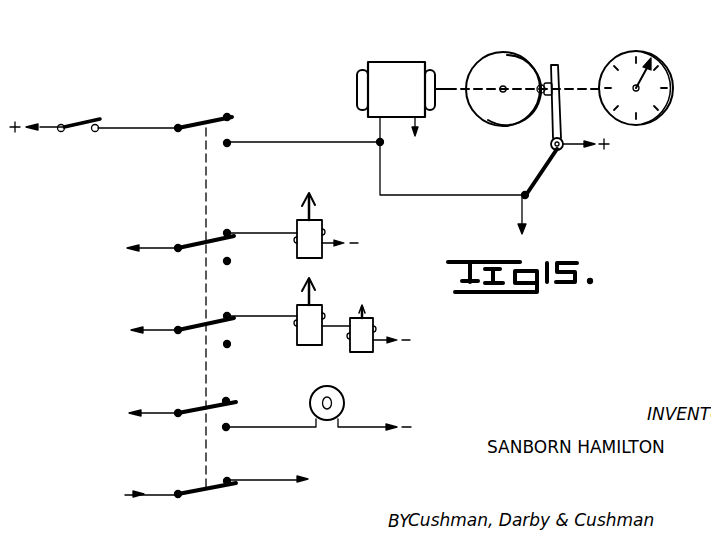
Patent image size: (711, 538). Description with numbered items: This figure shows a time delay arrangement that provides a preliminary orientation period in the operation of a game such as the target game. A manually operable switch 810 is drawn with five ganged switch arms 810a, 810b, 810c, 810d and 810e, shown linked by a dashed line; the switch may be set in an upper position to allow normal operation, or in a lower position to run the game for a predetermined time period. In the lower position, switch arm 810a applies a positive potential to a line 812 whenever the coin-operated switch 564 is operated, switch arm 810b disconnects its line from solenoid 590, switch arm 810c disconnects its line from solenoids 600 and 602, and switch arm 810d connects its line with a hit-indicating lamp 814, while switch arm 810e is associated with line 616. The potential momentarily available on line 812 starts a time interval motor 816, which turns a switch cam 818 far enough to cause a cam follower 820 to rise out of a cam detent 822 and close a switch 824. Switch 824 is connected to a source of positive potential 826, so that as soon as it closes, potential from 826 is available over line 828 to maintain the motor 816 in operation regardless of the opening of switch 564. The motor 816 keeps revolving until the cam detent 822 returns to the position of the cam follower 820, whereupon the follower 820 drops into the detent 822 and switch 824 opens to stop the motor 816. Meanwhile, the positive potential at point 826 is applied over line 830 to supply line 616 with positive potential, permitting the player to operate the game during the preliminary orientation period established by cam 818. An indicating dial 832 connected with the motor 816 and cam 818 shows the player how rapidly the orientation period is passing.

The coin-operated switch 564 is at (90, 118).
The switch arm 810a is at (188, 122).
The manually operable switch 810 is at (207, 188).
The line 812 is at (322, 148).
The time interval motor 816 is at (398, 60).
The switch cam 818 is at (505, 53).
The cam follower 820 is at (560, 66).
The cam detent 822 is at (523, 128).
The switch 824 is at (537, 190).
The source of positive potential 826 is at (578, 150).
The line 828 is at (452, 187).
The line 830 is at (518, 212).
The indicating dial 832 is at (665, 60).
The switch arm 810b is at (190, 240).
The solenoid 590 is at (322, 223).
The switch arm 810c is at (195, 322).
The solenoid 600 is at (320, 306).
The solenoid 602 is at (375, 320).
The switch arm 810d is at (190, 400).
The hit-indicating lamp 814 is at (340, 390).
The line 616 is at (146, 500).
The switch arm 810e is at (182, 498).